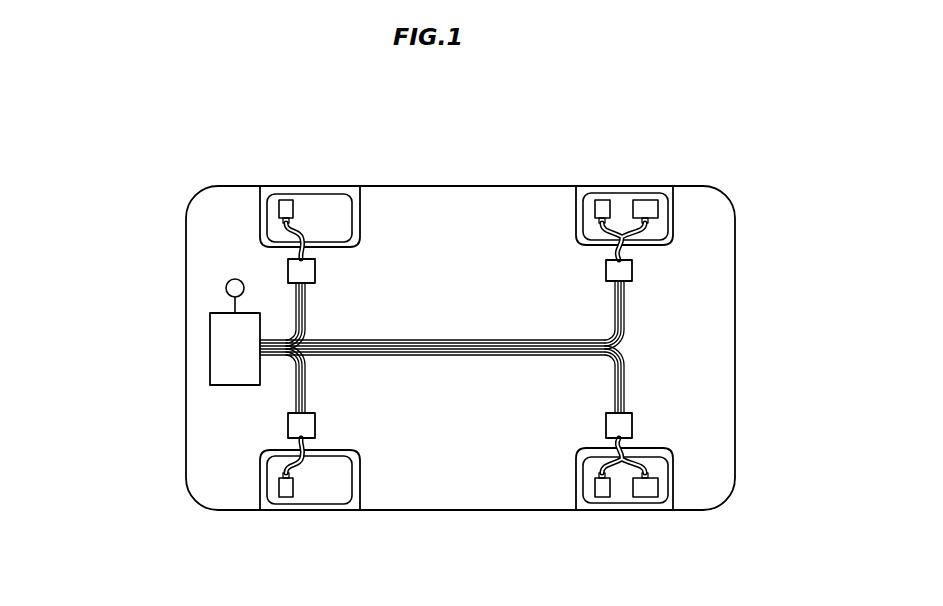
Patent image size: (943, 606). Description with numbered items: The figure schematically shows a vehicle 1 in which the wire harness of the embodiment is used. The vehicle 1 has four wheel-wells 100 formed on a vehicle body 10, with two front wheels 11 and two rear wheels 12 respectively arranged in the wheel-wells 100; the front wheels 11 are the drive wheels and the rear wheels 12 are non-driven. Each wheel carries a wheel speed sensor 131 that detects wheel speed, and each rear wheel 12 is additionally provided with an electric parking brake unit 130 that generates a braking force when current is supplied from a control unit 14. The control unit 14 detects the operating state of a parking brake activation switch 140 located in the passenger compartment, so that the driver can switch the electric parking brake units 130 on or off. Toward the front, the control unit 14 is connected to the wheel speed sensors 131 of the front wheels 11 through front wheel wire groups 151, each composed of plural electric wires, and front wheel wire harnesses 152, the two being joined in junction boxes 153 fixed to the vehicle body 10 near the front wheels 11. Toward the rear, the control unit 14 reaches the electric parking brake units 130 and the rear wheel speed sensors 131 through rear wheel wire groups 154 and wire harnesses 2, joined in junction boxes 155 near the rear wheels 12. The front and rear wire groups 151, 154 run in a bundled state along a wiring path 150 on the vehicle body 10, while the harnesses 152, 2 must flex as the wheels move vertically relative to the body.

The vehicle 1 is at (172, 125).
The vehicle body 10 is at (187, 248).
The front wheel 11 is at (355, 215).
The rear wheel 12 is at (675, 218).
The control unit 14 is at (210, 344).
The wheel-well 100 is at (327, 183).
The electric parking brake unit 130 is at (645, 199).
The wheel speed sensor 131 is at (285, 200).
The parking brake activation switch 140 is at (235, 278).
The wiring path 150 is at (440, 338).
The front wheel wire group 151 is at (308, 298).
The front wheel wire harness 152 is at (309, 249).
The junction box 153 is at (316, 276).
The rear wheel wire group 154 is at (627, 298).
The junction box 155 is at (632, 273).
The wire harness 2 is at (626, 249).